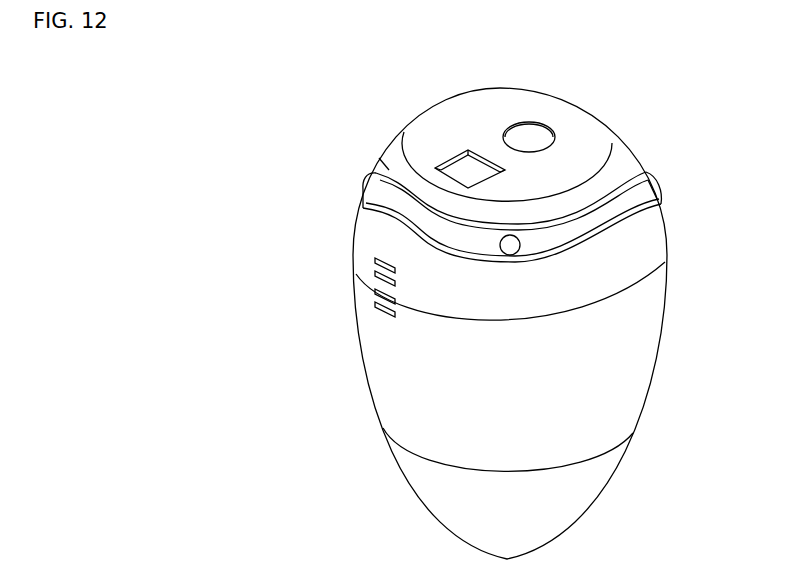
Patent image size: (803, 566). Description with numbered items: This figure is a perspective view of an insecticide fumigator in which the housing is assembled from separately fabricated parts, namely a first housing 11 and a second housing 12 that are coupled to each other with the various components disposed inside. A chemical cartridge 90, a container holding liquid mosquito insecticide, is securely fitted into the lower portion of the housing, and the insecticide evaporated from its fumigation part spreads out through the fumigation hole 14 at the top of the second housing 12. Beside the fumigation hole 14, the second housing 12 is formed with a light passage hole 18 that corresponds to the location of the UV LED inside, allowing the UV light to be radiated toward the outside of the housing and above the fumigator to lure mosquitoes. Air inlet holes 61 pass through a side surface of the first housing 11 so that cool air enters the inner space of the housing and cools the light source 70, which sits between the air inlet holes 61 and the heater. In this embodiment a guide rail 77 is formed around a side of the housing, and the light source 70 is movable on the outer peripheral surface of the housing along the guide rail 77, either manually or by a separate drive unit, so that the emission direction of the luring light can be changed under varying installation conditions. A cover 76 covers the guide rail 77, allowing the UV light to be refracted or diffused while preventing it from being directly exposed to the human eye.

The first housing 11 is at (635, 370).
The second housing 12 is at (620, 127).
The fumigation hole 14 is at (527, 130).
The light passage hole 18 is at (457, 157).
The air inlet hole 61 is at (375, 259).
The light source 70 is at (512, 254).
The cover 76 is at (650, 173).
The guide rail 77 is at (634, 200).
The chemical cartridge 90 is at (592, 485).